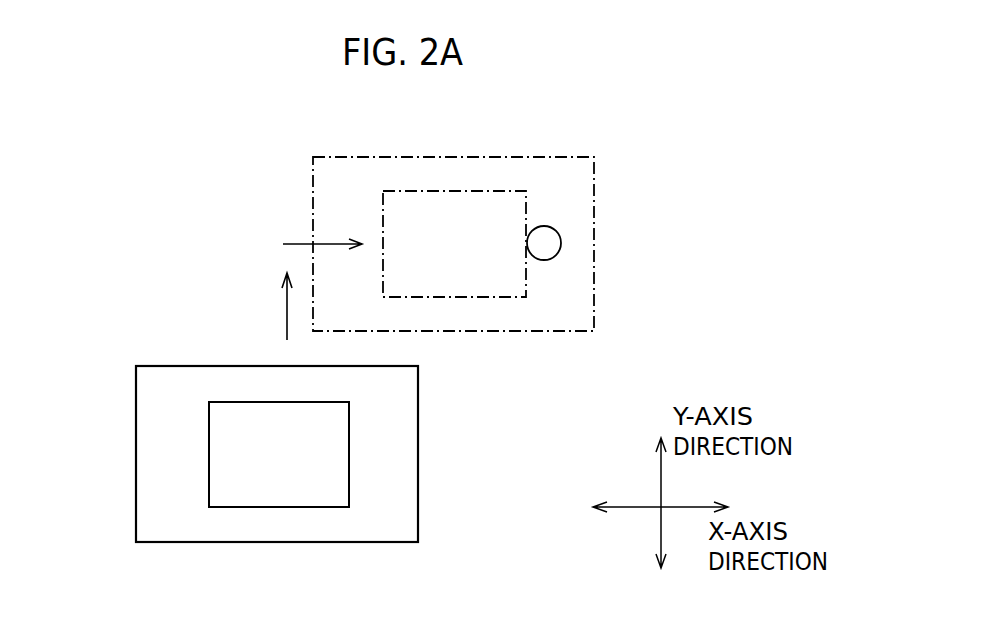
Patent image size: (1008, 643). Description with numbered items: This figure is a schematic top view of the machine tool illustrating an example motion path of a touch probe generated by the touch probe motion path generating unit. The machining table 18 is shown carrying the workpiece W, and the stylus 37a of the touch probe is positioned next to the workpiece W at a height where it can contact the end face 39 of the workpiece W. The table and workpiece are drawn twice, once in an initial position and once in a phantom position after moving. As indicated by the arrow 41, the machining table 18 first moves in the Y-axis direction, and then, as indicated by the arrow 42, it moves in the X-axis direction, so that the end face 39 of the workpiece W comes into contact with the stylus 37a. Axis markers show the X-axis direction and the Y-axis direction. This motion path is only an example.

The machining table 18 is at (313, 197).
The workpiece W is at (455, 190).
The end face 39 is at (350, 479).
The stylus 37a is at (558, 231).
The arrow 42 is at (287, 242).
The arrow 41 is at (285, 307).